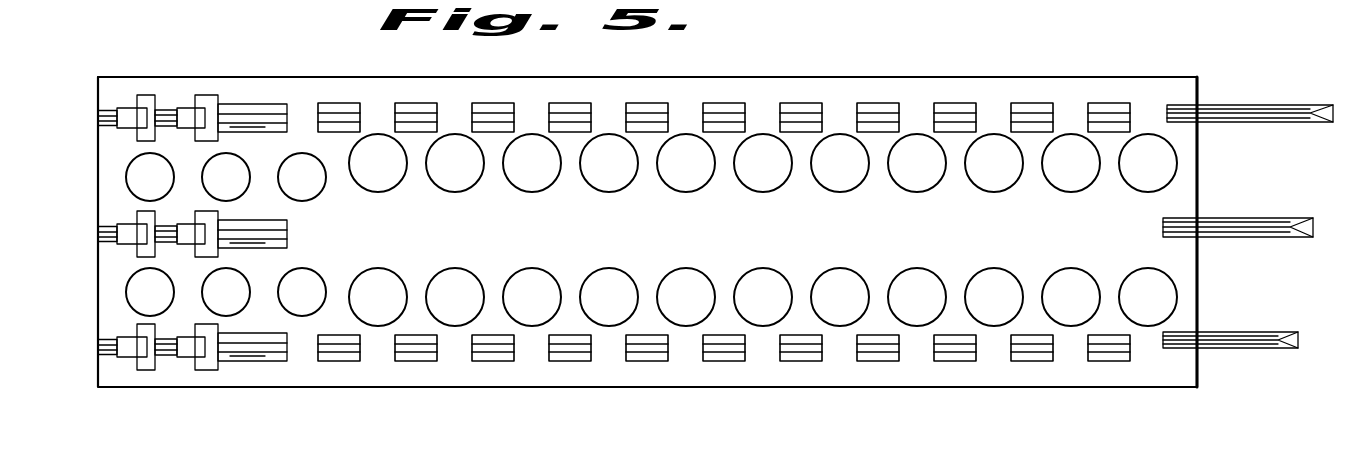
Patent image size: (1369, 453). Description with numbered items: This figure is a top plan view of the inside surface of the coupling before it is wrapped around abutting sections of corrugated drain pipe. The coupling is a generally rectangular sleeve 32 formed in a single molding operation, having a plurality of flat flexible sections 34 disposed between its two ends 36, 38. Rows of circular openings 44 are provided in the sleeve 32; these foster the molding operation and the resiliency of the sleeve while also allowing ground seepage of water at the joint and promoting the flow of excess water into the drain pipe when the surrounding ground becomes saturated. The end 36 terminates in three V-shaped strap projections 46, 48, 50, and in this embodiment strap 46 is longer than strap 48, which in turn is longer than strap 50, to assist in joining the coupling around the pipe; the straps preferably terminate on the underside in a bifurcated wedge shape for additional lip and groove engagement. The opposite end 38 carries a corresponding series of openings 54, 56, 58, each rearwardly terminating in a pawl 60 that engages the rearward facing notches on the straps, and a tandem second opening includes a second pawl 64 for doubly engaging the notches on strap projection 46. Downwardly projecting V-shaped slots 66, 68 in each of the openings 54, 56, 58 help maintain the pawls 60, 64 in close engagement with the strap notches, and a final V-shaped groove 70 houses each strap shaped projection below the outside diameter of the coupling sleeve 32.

The sleeve 32 is at (698, 244).
The flat flexible sections 34 is at (890, 57).
The end 36 is at (1197, 77).
The end 38 is at (98, 88).
The circular openings 44 is at (684, 326).
The V-shaped strap projection 46 is at (1340, 88).
The V-shaped strap projection 48 is at (1335, 198).
The V-shaped strap projection 50 is at (1320, 312).
The opening 54 is at (92, 119).
The opening 56 is at (95, 234).
The opening 58 is at (98, 347).
The pawls 60 is at (143, 120).
The second pawl 64 is at (218, 110).
The V-shaped slot 66 is at (118, 108).
The V-shaped slot 68 is at (166, 108).
The final V-shaped groove 70 is at (273, 362).